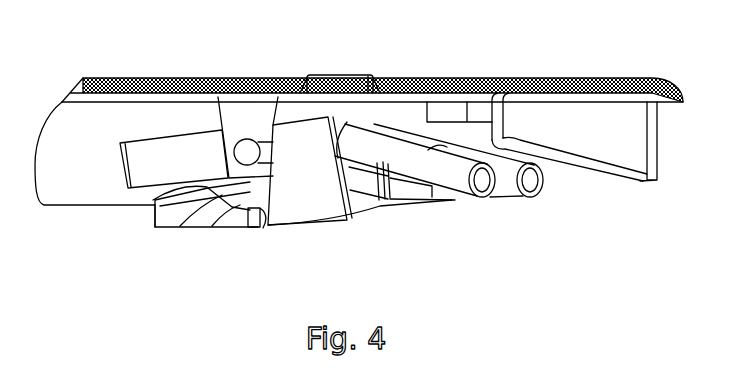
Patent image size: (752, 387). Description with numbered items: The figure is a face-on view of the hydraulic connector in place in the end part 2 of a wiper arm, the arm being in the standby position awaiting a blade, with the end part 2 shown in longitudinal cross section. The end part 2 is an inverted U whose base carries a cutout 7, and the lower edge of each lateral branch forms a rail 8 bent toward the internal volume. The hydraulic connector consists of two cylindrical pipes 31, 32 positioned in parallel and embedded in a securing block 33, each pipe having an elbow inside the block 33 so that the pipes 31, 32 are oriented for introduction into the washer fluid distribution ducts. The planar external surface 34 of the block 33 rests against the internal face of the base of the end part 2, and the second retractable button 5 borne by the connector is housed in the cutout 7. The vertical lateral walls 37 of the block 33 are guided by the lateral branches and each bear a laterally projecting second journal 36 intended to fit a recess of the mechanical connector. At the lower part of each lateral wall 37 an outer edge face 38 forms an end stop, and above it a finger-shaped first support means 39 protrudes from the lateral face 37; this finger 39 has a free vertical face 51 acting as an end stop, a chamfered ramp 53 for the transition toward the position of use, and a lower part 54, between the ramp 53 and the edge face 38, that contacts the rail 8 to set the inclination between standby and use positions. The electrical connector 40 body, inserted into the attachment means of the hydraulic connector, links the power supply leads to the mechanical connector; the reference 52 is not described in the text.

The end part 2 is at (95, 86).
The cutout 7 is at (297, 86).
The second retractable button 5 is at (343, 84).
The external surface 34 is at (412, 88).
The securing block 33 is at (449, 115).
The second journal 36 is at (247, 147).
The lateral wall 37 is at (323, 212).
The pipe 31 is at (138, 167).
The pipe 32 is at (487, 198).
The electrical connector 40 is at (367, 208).
The vertical face 51 is at (407, 192).
The rail 8 is at (232, 227).
The first support means 39 is at (230, 188).
The outer edge face 38 is at (266, 215).
The housing bottom 52 is at (152, 207).
The ramp 53 is at (222, 196).
The lower part of the finger 54 is at (246, 226).